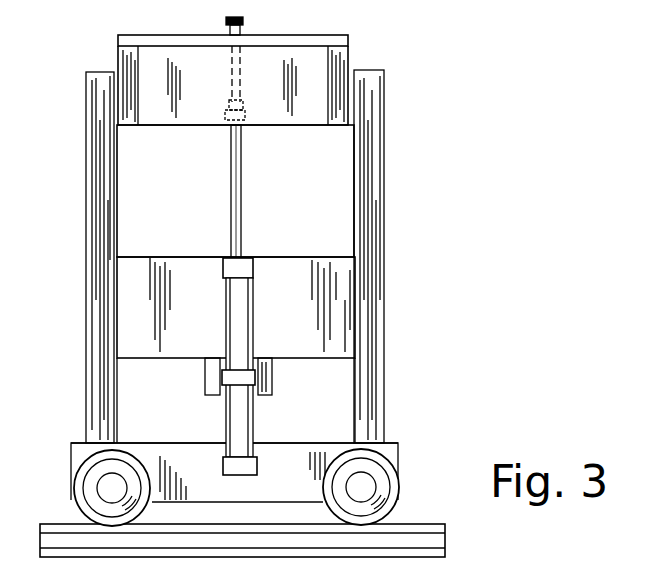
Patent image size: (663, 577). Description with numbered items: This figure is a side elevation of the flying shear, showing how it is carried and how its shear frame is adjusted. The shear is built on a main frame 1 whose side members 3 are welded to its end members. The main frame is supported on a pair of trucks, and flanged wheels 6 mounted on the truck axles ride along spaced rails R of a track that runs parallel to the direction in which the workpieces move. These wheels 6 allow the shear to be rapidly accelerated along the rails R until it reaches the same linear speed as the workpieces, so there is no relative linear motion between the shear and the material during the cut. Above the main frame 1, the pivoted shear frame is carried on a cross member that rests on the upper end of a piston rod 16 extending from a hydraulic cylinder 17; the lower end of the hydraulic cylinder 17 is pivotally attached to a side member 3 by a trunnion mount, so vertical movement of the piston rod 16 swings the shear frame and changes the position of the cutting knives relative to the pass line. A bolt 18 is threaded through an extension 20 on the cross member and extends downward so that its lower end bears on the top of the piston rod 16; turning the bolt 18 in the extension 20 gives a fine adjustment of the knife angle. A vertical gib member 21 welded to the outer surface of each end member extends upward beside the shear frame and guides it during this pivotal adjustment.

The main frame 1 is at (292, 483).
The side member 3 is at (398, 444).
The flanged wheels 6 is at (88, 498).
The piston rod 16 is at (243, 195).
The hydraulic cylinder 17 is at (252, 313).
The bolt 18 is at (244, 24).
The extension 20 is at (325, 36).
The vertical gib member 21 is at (97, 167).
The rails R is at (446, 541).